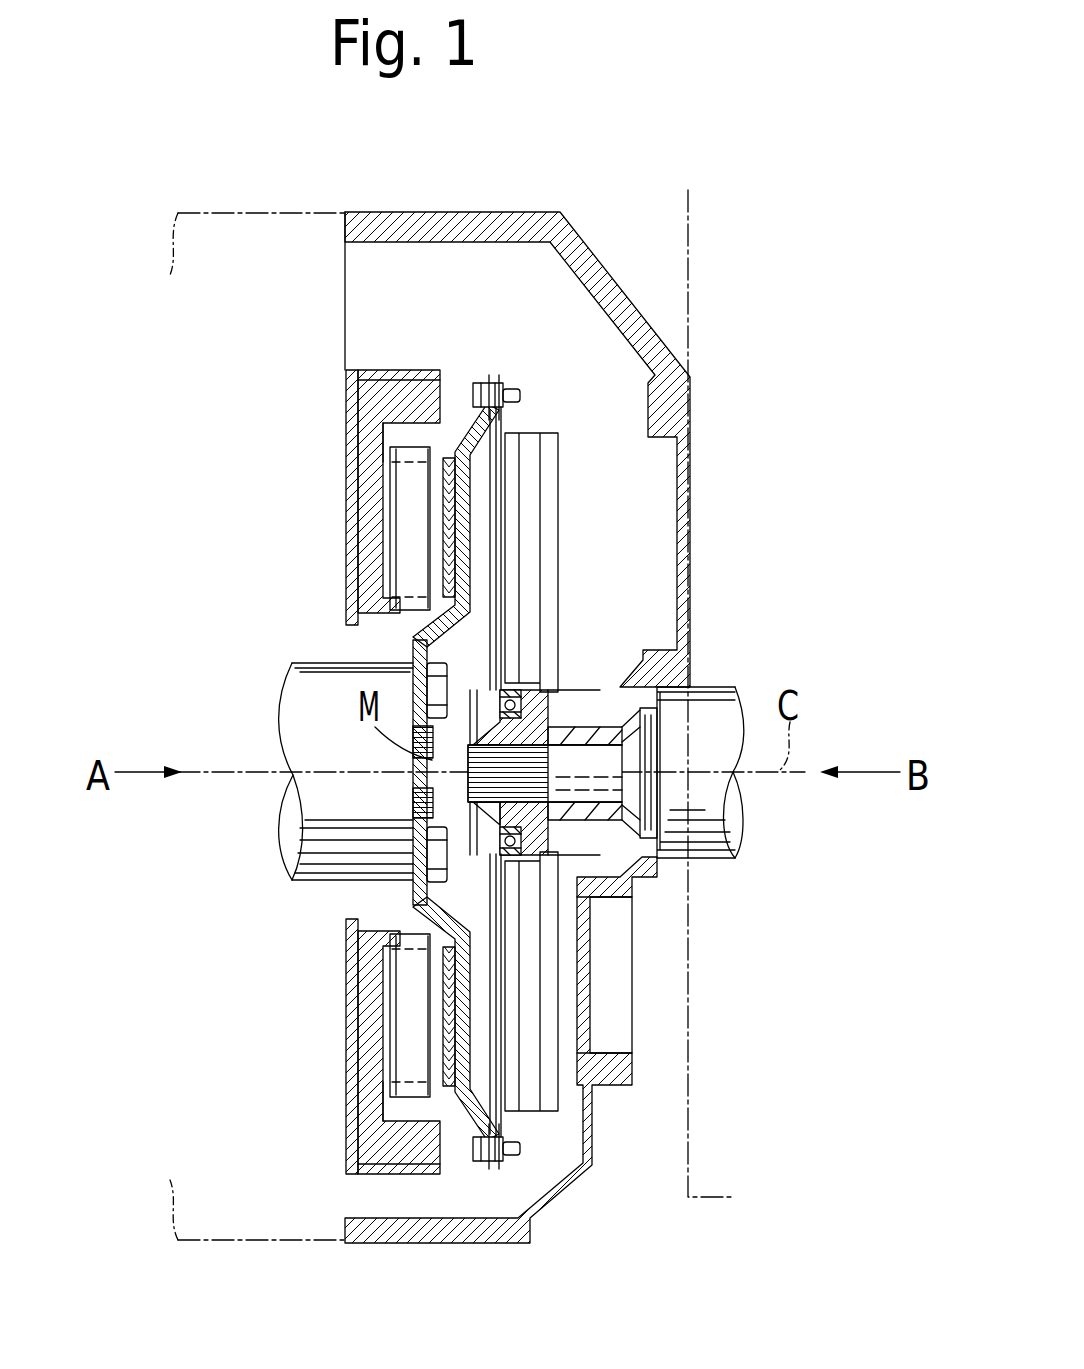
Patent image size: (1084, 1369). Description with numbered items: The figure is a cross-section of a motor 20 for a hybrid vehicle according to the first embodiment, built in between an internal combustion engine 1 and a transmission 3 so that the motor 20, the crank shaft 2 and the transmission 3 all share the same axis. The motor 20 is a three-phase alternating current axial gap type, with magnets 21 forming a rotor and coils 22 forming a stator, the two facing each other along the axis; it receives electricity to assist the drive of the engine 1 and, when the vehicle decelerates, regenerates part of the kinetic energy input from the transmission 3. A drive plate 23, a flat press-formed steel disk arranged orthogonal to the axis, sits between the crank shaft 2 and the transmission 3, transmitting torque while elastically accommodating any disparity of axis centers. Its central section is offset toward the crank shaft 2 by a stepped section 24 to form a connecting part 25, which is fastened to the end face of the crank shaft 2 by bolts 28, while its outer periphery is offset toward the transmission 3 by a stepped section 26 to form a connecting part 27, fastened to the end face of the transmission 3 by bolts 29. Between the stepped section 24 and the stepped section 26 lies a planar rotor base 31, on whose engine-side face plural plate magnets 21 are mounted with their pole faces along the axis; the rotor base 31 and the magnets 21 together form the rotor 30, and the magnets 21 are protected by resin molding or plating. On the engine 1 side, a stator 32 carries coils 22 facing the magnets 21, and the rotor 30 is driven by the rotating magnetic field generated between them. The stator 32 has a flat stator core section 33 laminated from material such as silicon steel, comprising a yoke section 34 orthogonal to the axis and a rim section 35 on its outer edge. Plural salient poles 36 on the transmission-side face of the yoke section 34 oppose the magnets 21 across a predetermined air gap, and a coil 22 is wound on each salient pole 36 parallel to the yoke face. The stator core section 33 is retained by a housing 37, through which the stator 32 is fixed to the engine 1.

The internal combustion engine 1 is at (205, 200).
The crank shaft 2 is at (295, 662).
The transmission 3 is at (566, 428).
The motor 20 is at (288, 982).
The magnets 21 is at (447, 458).
The coils 22 is at (413, 485).
The drive plate 23 is at (366, 900).
The stepped section 24 is at (395, 592).
The connecting part 25 is at (413, 822).
The stepped section 26 is at (468, 445).
The connecting part 27 is at (504, 386).
The bolts 28 is at (500, 676).
The bolts 29 is at (493, 400).
The rotor 30 is at (484, 550).
The rotor base 31 is at (506, 472).
The stator 32 is at (334, 432).
The stator core section 33 is at (300, 796).
The yoke section 34 is at (368, 468).
The rim section 35 is at (350, 396).
The salient poles 36 is at (373, 540).
The housing 37 is at (352, 412).